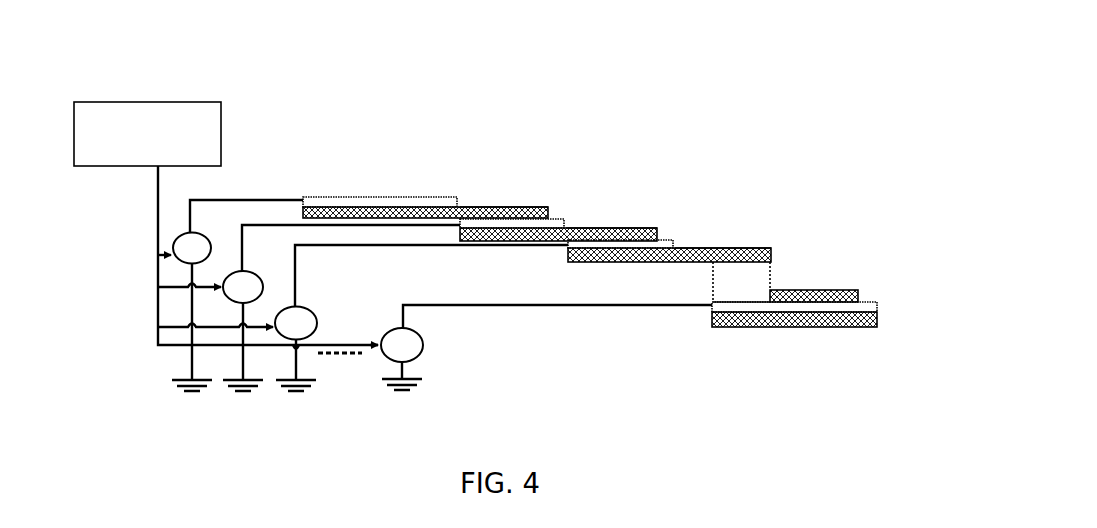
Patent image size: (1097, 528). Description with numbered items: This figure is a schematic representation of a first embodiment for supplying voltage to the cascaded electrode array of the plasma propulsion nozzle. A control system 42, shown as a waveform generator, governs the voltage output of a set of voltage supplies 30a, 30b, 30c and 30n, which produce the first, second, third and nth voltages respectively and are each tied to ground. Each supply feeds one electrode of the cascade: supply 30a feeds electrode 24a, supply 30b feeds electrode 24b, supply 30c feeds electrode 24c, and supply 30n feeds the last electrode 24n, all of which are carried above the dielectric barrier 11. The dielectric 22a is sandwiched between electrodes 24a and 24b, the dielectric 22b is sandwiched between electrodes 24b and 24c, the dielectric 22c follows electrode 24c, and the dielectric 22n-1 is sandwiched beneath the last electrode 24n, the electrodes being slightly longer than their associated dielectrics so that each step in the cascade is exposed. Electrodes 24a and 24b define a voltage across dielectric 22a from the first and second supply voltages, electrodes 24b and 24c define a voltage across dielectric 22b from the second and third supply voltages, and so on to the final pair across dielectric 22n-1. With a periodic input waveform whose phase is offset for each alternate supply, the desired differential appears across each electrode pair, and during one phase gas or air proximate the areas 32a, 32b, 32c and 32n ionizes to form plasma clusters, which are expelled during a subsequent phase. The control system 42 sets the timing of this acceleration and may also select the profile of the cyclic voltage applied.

The control system 42 is at (222, 150).
The voltage supply 30a is at (183, 234).
The voltage supply 30b is at (227, 283).
The voltage supply 30c is at (280, 318).
The voltage supply 30n is at (423, 341).
The electrode 24a is at (328, 197).
The electrode 24b is at (556, 219).
The electrode 24c is at (672, 240).
The electrode 24n is at (868, 302).
The dielectric 22a is at (466, 207).
The dielectric 22b is at (604, 228).
The dielectric 22c is at (749, 248).
The dielectric 22n-1 is at (840, 290).
The area 32a is at (507, 200).
The area 32b is at (630, 222).
The area 32c is at (692, 243).
The area 32n is at (788, 279).
The dielectric barrier 11 is at (798, 318).